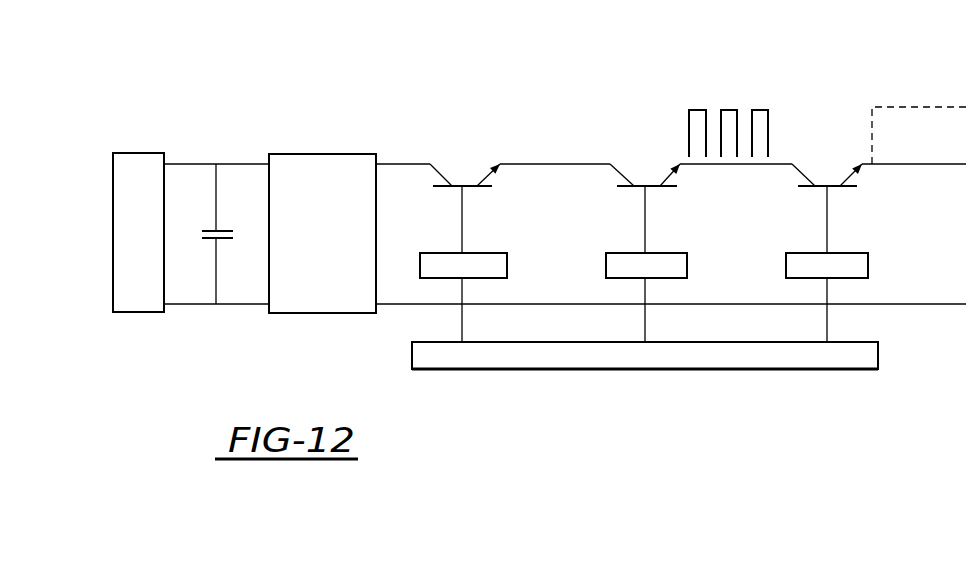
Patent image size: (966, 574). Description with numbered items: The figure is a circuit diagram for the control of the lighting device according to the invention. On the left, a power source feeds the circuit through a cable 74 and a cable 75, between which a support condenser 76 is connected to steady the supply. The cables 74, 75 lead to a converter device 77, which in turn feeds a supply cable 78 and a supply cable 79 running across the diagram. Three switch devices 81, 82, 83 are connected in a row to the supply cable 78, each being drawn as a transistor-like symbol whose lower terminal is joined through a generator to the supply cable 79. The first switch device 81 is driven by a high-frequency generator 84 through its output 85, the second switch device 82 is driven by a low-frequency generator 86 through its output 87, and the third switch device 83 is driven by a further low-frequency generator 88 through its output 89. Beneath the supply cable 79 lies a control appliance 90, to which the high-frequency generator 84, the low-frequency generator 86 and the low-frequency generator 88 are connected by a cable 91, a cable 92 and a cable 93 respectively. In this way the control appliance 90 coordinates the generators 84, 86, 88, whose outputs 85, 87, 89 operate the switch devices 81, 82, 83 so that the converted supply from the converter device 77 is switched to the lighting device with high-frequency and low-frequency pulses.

The cable 74 is at (186, 164).
The cable 75 is at (198, 304).
The support condenser 76 is at (232, 212).
The converter device 77 is at (318, 165).
The supply cable 78 is at (573, 164).
The supply cable 79 is at (597, 304).
The switch device 81 is at (460, 175).
The switch device 82 is at (640, 177).
The switch device 83 is at (820, 175).
The high-frequency generator 84 is at (433, 258).
The output 85 is at (507, 177).
The low-frequency generator 86 is at (683, 270).
The output 87 is at (690, 178).
The low-frequency generator 88 is at (863, 262).
The output 89 is at (865, 188).
The control appliance 90 is at (520, 362).
The cable 91 is at (462, 322).
The cable 92 is at (645, 322).
The cable 93 is at (827, 327).